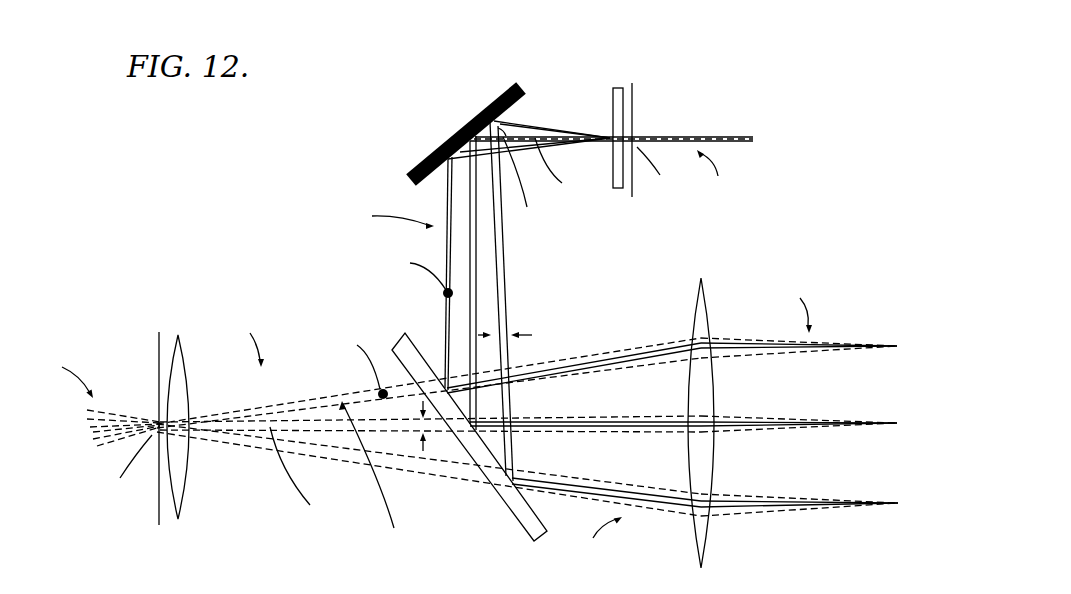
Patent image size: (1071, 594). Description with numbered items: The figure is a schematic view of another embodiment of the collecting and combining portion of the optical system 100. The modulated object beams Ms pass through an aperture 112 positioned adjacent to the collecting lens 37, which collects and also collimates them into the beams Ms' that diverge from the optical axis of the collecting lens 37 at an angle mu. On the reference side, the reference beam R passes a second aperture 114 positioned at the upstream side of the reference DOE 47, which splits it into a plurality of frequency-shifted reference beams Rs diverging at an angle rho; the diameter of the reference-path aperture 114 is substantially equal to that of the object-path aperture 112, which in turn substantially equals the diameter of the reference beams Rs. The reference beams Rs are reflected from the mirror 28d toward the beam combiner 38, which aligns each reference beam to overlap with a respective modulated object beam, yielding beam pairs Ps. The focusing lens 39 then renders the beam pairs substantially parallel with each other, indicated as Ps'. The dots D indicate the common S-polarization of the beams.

The optical system 100 is at (238, 198).
The mirror 28d is at (462, 128).
The reference DOE 47 is at (611, 100).
The reference-path aperture 114 is at (633, 100).
The collecting lens 37 is at (178, 340).
The aperture 112 is at (158, 367).
The beam combiner 38 is at (515, 515).
The focusing lens 39 is at (690, 318).